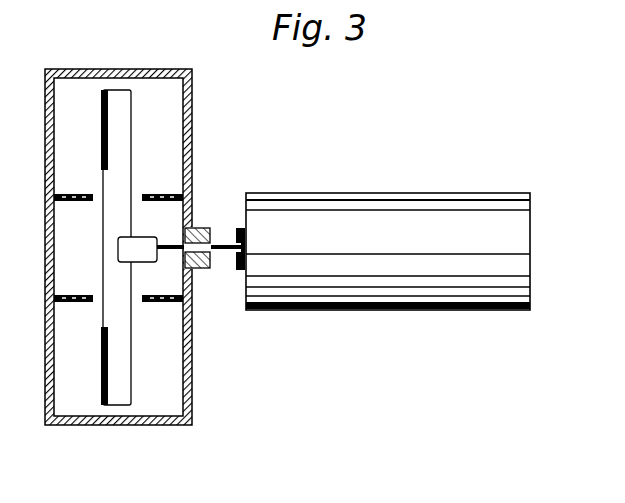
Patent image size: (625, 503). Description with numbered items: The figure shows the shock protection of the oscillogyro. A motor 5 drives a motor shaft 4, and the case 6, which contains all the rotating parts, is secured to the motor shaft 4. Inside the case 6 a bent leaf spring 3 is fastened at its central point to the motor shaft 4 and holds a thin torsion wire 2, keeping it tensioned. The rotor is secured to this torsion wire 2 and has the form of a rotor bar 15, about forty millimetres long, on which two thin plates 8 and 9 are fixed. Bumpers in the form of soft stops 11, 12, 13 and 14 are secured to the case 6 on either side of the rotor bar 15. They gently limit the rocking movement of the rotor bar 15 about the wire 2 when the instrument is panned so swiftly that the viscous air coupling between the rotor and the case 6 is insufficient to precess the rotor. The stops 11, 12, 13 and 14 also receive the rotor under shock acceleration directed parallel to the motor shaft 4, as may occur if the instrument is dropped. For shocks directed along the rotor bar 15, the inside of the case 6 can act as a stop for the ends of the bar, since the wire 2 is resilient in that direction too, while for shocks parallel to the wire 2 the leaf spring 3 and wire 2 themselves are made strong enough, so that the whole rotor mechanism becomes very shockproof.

The torsion wire 2 is at (118, 246).
The leaf spring 3 is at (141, 250).
The motor shaft 4 is at (223, 230).
The motor 5 is at (483, 222).
The case 6 is at (190, 377).
The thin plate 8 is at (101, 116).
The thin plate 9 is at (103, 381).
The soft stop 11 is at (65, 193).
The soft stop 12 is at (68, 302).
The soft stop 13 is at (165, 193).
The soft stop 14 is at (165, 302).
The rotor bar 15 is at (121, 122).